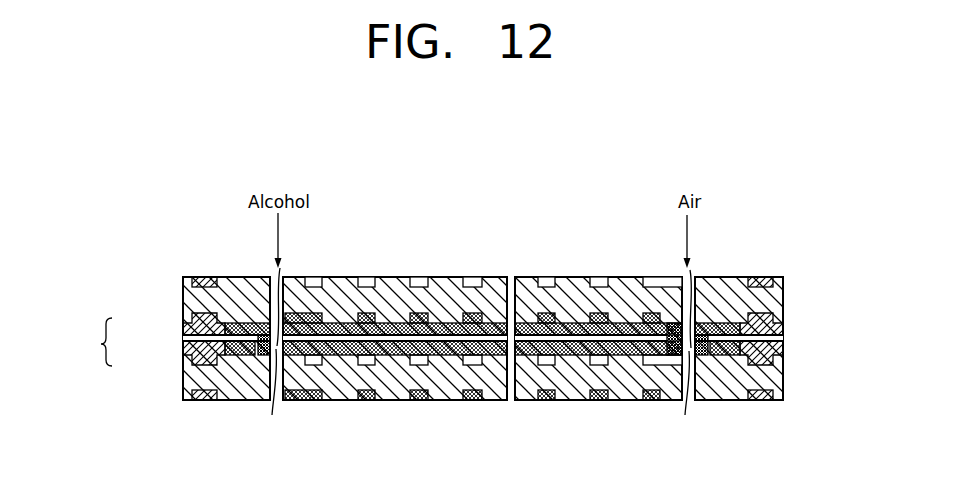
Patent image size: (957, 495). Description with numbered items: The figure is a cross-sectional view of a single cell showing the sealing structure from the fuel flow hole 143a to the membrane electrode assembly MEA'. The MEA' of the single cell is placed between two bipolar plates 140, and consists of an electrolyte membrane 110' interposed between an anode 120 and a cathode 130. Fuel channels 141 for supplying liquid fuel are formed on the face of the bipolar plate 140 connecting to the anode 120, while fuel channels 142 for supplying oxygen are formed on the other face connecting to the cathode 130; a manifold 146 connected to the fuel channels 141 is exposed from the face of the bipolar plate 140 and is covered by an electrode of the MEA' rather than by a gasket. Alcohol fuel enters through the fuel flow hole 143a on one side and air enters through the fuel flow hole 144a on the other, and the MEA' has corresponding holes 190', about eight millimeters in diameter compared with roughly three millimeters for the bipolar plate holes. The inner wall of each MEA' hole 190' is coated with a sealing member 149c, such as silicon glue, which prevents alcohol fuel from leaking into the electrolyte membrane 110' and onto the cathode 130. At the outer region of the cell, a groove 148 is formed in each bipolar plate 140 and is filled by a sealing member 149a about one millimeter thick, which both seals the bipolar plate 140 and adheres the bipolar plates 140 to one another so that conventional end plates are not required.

The groove 148 is at (208, 282).
The fuel flow hole 143a is at (280, 280).
The manifold 146 is at (315, 316).
The fuel channels 142 is at (472, 285).
The fuel channels 141 is at (546, 315).
The fuel flow hole 144a is at (690, 277).
The anode 120 is at (195, 328).
The electrolyte membrane 110' is at (450, 343).
The cathode 130 is at (190, 360).
The bipolar plate 140 is at (192, 376).
The holes of the MEA' 190' is at (460, 382).
The sealing member 149c is at (272, 415).
The sealing member 149a is at (786, 345).
The membrane electrode assembly MEA' is at (81, 342).